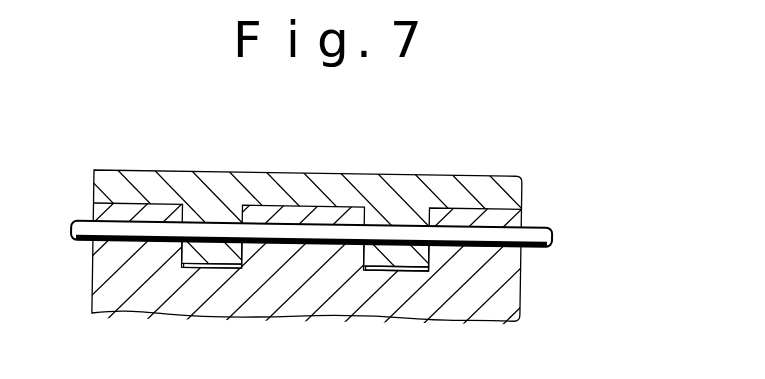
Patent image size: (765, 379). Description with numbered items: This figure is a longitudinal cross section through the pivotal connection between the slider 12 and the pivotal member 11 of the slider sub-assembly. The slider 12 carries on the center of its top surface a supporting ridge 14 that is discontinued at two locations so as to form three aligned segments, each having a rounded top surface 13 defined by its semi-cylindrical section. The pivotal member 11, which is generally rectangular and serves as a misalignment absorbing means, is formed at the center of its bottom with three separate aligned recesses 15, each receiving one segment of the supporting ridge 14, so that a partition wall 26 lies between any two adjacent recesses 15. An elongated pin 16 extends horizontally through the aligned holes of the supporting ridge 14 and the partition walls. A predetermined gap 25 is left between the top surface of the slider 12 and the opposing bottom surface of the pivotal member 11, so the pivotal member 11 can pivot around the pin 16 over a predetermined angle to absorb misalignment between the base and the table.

The pivotal member 11 is at (438, 186).
The slider 12 is at (508, 309).
The rounded top surface 13 is at (608, 177).
The supporting ridge 14 is at (497, 273).
The recesses 15 is at (487, 212).
The pin 16 is at (549, 226).
The gap 25 is at (395, 268).
The partition wall 26 is at (437, 250).